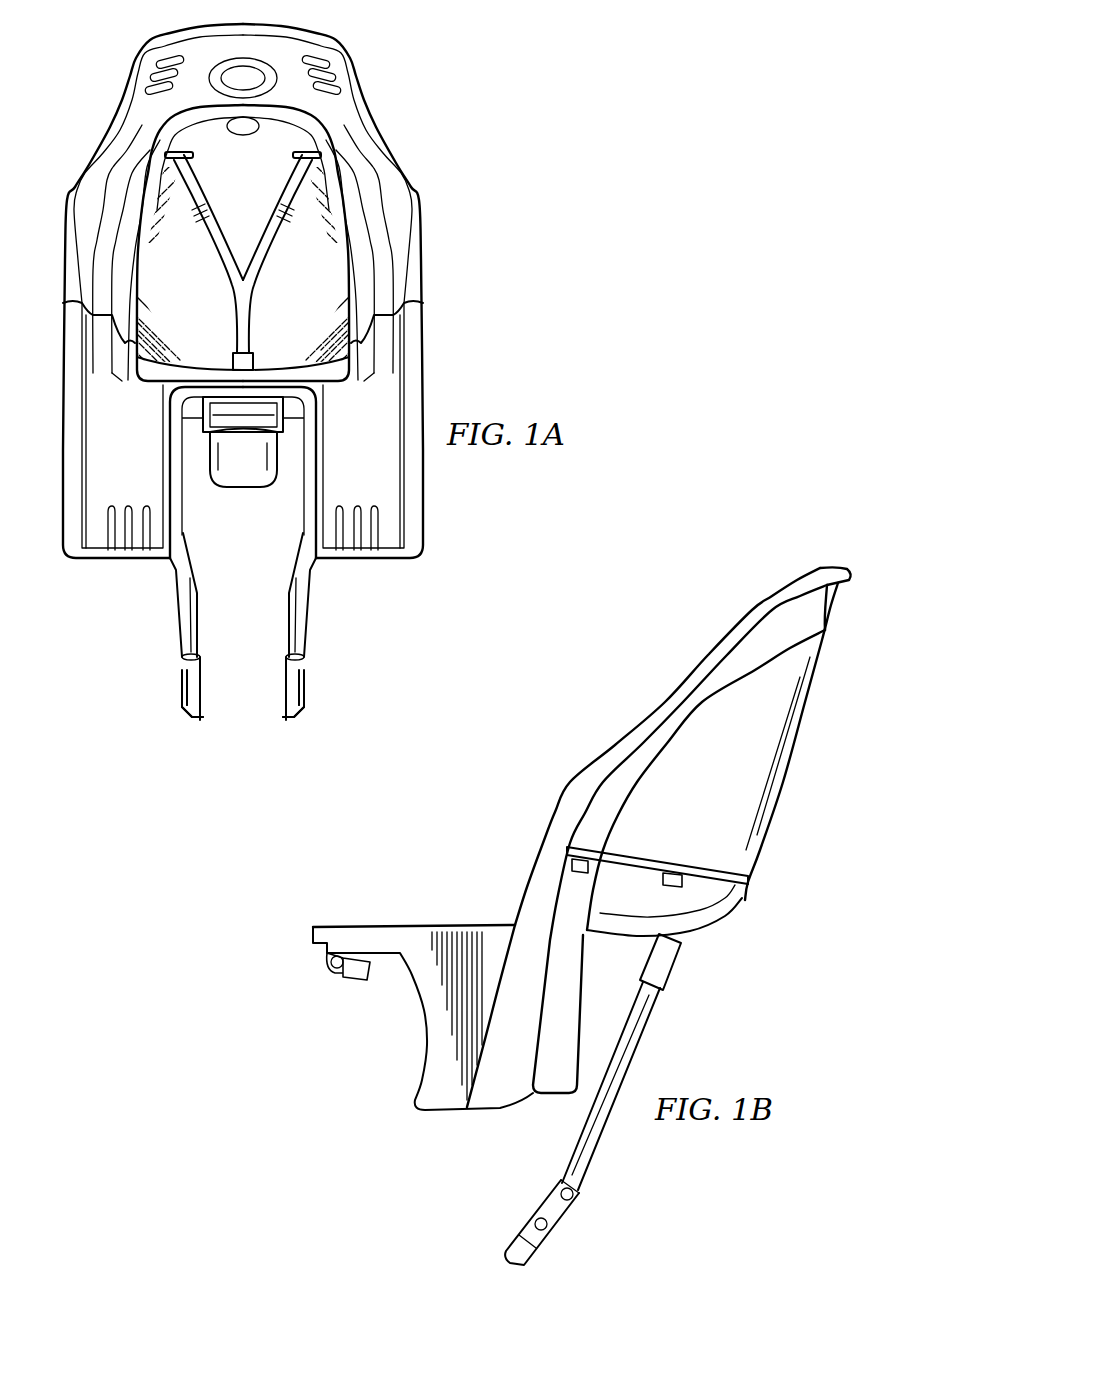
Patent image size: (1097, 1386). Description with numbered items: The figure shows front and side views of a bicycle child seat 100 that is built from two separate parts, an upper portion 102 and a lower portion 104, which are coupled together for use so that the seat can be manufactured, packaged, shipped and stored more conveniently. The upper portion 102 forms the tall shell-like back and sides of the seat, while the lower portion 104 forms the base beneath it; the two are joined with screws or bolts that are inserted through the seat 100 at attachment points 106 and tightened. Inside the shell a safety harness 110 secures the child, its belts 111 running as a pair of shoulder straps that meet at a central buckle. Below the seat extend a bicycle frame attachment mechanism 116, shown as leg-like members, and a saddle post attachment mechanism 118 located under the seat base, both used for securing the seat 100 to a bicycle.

In FIG. 1A, the bicycle child seat 100 is at (304, 372).
In FIG. 1B, the bicycle child seat 100 is at (582, 916).
In FIG. 1A, the upper portion 102 is at (122, 97).
In FIG. 1B, the upper portion 102 is at (702, 661).
In FIG. 1A, the lower portion 104 is at (103, 566).
In FIG. 1B, the lower portion 104 is at (447, 1112).
In FIG. 1B, the attachment points 106 is at (663, 880).
In FIG. 1A, the safety harness 110 is at (275, 279).
In FIG. 1A, the belts 111 is at (290, 190).
In FIG. 1A, the bicycle frame attachment mechanism 116 is at (178, 686).
In FIG. 1B, the bicycle frame attachment mechanism 116 is at (520, 1222).
In FIG. 1A, the saddle post attachment mechanism 118 is at (247, 437).
In FIG. 1B, the saddle post attachment mechanism 118 is at (350, 984).